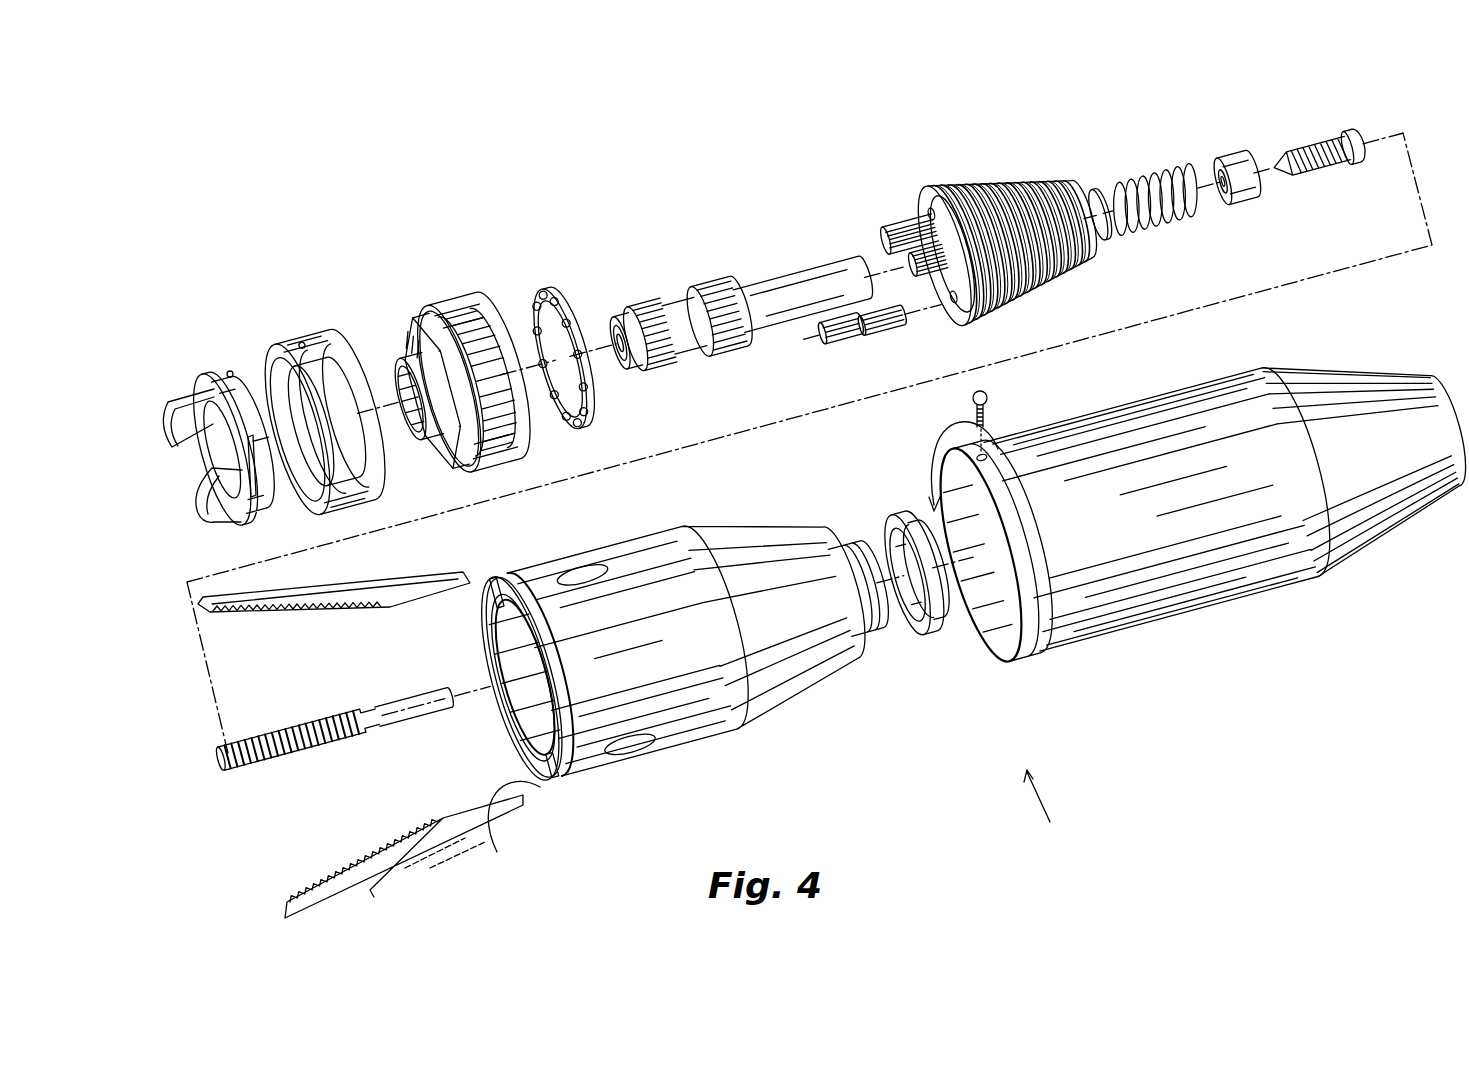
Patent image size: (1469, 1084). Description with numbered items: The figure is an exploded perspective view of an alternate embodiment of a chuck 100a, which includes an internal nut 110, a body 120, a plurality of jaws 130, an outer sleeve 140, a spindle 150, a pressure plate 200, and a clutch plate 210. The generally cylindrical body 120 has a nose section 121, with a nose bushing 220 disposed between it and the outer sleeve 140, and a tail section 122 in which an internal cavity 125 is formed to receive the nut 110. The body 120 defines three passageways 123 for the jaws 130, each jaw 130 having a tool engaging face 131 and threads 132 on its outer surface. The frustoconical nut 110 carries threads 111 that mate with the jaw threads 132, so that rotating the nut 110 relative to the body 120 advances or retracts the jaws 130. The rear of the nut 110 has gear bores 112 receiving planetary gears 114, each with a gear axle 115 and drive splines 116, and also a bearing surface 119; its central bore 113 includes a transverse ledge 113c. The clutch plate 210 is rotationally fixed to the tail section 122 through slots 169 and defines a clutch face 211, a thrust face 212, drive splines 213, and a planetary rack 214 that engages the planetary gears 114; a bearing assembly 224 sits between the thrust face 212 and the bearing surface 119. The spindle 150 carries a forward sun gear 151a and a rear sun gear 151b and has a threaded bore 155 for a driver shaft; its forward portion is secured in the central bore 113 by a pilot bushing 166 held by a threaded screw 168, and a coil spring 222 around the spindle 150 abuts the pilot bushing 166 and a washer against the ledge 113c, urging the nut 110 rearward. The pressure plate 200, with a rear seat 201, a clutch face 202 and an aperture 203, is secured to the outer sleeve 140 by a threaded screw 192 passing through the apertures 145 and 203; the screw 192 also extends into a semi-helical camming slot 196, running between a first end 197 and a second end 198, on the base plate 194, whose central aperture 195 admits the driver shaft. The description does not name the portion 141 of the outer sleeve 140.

The chuck 100a is at (1057, 807).
The internal nut 110 is at (914, 197).
The threads 111 is at (1013, 180).
The gear bores 112 is at (938, 302).
The central bore 113 is at (933, 247).
The ledge 113c is at (1093, 187).
The planetary gears 114 is at (889, 207).
The gear axle 115 is at (873, 323).
The drive splines 116 is at (837, 337).
The bearing surface 119 is at (955, 320).
The body 120 is at (717, 737).
The nose section 121 is at (863, 633).
The tail section 122 is at (521, 725).
The passageways 123 is at (638, 745).
The internal cavity 125 is at (510, 827).
The jaws 130 is at (378, 590).
The tool engaging face 131 is at (423, 598).
The threads 132 is at (278, 610).
The outer sleeve 140 is at (1137, 625).
The tapered sleeve end 141 is at (1377, 540).
The aperture 145 is at (954, 451).
The spindle 150 is at (770, 287).
The forward sun gear 151a is at (738, 345).
The rear sun gear 151b is at (660, 363).
The threaded bore 155 is at (625, 367).
The pilot bushing 166 is at (1247, 203).
The threaded screw 168 is at (1325, 142).
The slots 169 is at (487, 583).
The threaded screw 192 is at (995, 400).
The base plate 194 is at (197, 388).
The central aperture 195 is at (210, 463).
The semi-helical camming slot 196 is at (220, 430).
The first end 197 is at (258, 478).
The second end 198 is at (230, 371).
The pressure plate 200 is at (323, 330).
The rear seat 201 is at (285, 347).
The clutch face 202 is at (357, 343).
The aperture 203 is at (302, 347).
The clutch plate 210 is at (440, 305).
The clutch face 211 is at (462, 470).
The thrust face 212 is at (522, 437).
The drive splines 213 is at (423, 437).
The planetary rack 214 is at (475, 333).
The nose bushing 220 is at (933, 620).
The coil spring 222 is at (1148, 183).
The bearing assembly 224 is at (573, 292).